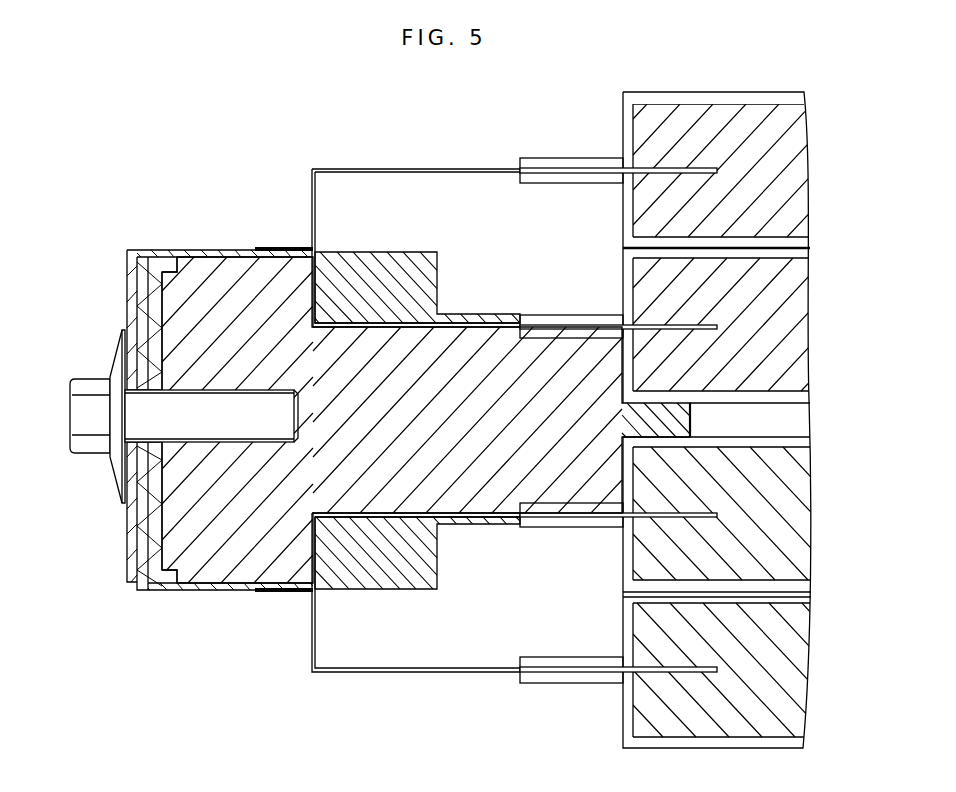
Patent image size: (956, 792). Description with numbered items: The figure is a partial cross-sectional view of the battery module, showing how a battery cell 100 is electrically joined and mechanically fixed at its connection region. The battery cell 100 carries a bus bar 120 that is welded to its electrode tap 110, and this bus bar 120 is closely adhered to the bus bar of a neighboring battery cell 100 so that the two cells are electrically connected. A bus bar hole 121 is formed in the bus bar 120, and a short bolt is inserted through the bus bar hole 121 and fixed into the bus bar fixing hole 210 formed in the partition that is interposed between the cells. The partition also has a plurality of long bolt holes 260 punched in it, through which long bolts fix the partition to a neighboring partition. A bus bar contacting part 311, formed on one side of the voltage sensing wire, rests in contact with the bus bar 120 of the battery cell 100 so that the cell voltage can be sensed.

The battery cell 100 is at (648, 131).
The electrode tap 110 is at (445, 169).
The bus bar 120 is at (128, 251).
The bus bar hole 121 is at (130, 380).
The bus bar fixing hole 210 is at (232, 440).
The long bolt hole 260 is at (83, 453).
The bus bar contacting part 311 is at (157, 539).